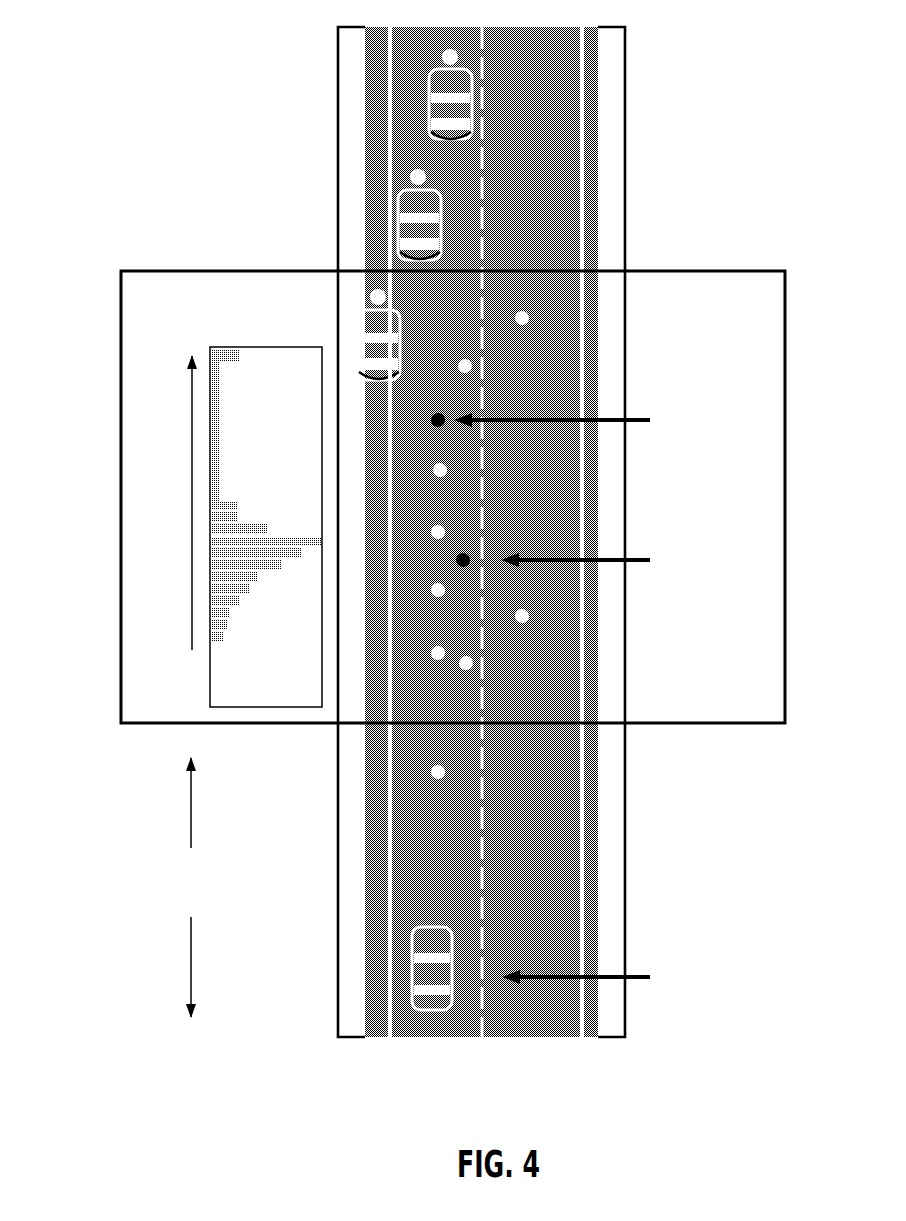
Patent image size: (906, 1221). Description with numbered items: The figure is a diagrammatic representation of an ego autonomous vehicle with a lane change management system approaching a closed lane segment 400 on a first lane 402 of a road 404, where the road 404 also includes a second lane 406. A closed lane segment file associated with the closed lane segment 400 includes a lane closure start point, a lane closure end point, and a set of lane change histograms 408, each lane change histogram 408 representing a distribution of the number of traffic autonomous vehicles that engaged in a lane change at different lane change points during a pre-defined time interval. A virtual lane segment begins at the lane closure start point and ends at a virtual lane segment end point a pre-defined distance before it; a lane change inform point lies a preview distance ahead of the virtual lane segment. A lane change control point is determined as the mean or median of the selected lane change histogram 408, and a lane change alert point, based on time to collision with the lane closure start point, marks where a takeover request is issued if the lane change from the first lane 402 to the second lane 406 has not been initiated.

The closed lane segment 400 is at (410, 532).
The first lane 402 is at (420, 870).
The road 404 is at (597, 890).
The second lane 406 is at (555, 185).
The lane change histogram 408 is at (210, 440).